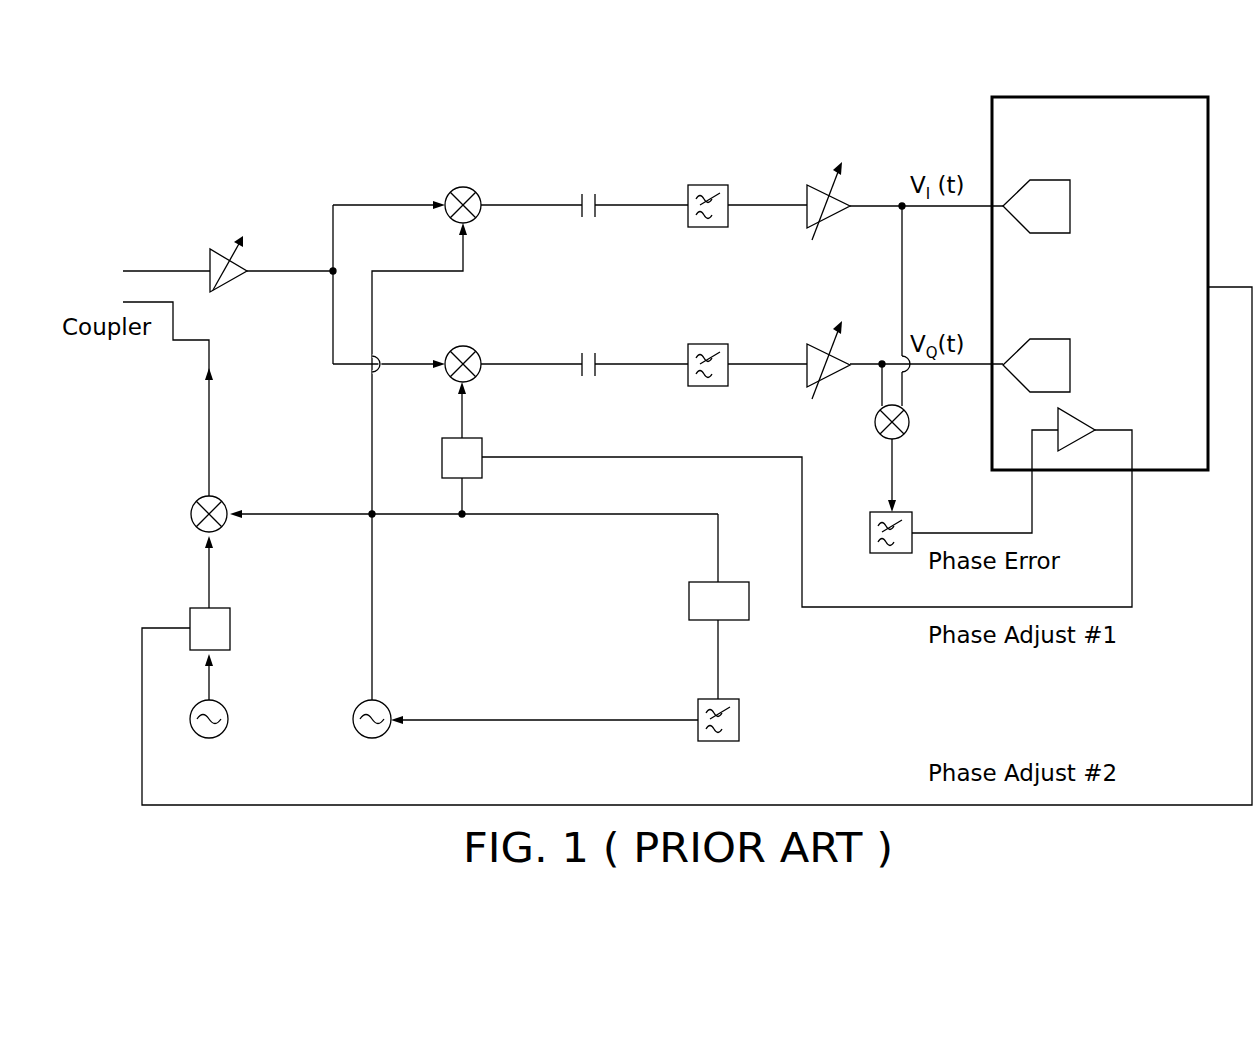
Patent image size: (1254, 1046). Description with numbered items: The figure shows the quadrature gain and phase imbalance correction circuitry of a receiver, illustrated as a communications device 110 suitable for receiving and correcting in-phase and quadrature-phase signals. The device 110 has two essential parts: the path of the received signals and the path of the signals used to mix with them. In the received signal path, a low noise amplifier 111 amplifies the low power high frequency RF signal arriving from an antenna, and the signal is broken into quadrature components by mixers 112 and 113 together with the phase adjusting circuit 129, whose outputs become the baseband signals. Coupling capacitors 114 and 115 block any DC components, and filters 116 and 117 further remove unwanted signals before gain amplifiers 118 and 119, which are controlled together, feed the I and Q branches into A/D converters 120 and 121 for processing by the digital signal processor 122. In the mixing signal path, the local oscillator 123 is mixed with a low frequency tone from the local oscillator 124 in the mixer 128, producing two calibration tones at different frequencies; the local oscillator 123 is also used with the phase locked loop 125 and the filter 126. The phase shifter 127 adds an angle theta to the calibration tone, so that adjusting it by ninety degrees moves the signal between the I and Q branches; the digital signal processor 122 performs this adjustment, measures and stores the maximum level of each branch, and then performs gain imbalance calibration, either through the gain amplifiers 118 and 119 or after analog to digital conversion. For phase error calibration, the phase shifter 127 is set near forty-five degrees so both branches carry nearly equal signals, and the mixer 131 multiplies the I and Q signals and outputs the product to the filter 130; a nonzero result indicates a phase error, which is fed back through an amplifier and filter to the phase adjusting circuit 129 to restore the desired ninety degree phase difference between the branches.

The communications device 110 is at (213, 127).
The low noise amplifier 111 is at (212, 250).
The mixer M1 112 is at (452, 186).
The mixer M2 113 is at (452, 345).
The coupling capacitor C1 114 is at (586, 192).
The coupling capacitor C2 115 is at (586, 352).
The filter F1 116 is at (695, 185).
The filter F2 117 is at (695, 345).
The gain amplifier G1 118 is at (808, 182).
The gain amplifier G2 119 is at (808, 342).
The A/D converter 120 is at (1050, 179).
The A/D converter 121 is at (1050, 338).
The digital signal processor 122 is at (1178, 97).
The local oscillator L1 123 is at (383, 702).
The local oscillator L2 124 is at (221, 703).
The phase locked loop 125 is at (697, 582).
The filter F3 126 is at (703, 699).
The phase shifter P2 127 is at (222, 608).
The mixer M4 128 is at (224, 496).
The phase adjusting circuit P1 129 is at (447, 437).
The filter F4 130 is at (877, 510).
The mixer M3 131 is at (874, 421).